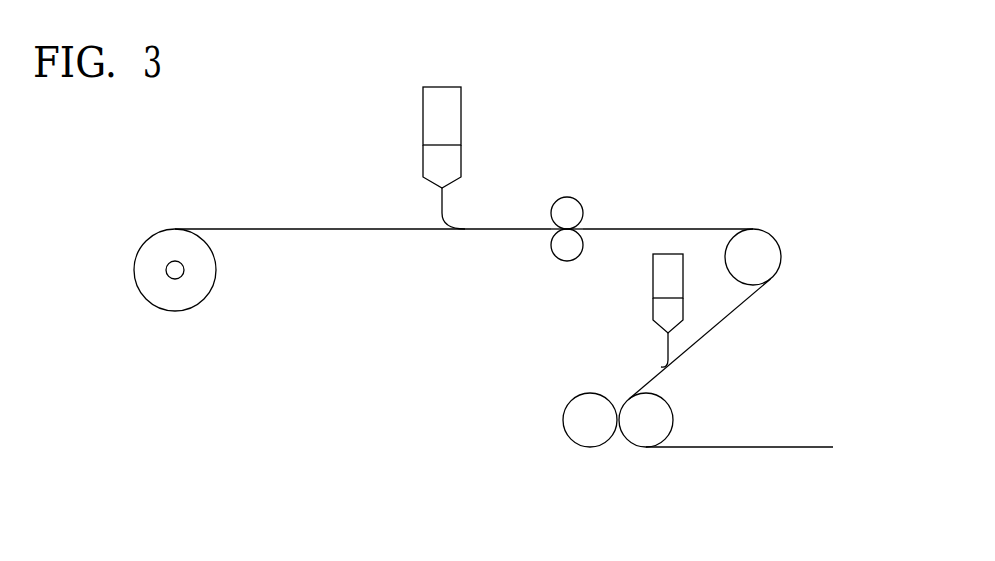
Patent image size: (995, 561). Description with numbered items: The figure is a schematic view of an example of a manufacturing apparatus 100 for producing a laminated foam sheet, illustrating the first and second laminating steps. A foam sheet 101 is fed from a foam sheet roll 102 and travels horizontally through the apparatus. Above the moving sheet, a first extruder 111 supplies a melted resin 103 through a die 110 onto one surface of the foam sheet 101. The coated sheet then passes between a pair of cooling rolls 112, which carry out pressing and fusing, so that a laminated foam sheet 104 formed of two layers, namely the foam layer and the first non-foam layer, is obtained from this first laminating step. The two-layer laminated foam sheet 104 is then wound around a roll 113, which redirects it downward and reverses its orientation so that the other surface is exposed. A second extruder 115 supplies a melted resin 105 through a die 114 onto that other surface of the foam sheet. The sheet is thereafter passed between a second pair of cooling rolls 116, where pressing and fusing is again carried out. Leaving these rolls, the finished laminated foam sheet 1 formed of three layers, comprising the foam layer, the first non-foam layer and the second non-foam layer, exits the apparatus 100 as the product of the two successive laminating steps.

The manufacturing apparatus 100 is at (838, 125).
The foam sheet 101 is at (268, 229).
The foam sheet roll 102 is at (137, 268).
The melted resin 103 is at (445, 214).
The laminated foam sheet 104 is at (670, 229).
The melted resin 105 is at (665, 347).
The die 110 is at (430, 168).
The first extruder 111 is at (430, 116).
The pair of cooling rolls 112 is at (580, 193).
The roll 113 is at (765, 255).
The die 114 is at (660, 310).
The second extruder 115 is at (660, 275).
The pair of cooling rolls 116 is at (583, 455).
The laminated foam sheet 1 is at (757, 447).